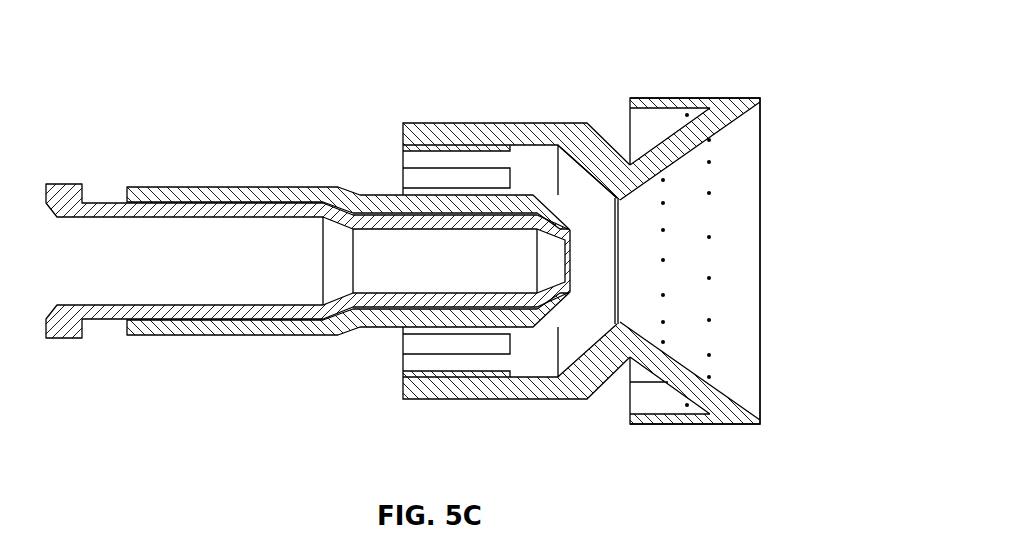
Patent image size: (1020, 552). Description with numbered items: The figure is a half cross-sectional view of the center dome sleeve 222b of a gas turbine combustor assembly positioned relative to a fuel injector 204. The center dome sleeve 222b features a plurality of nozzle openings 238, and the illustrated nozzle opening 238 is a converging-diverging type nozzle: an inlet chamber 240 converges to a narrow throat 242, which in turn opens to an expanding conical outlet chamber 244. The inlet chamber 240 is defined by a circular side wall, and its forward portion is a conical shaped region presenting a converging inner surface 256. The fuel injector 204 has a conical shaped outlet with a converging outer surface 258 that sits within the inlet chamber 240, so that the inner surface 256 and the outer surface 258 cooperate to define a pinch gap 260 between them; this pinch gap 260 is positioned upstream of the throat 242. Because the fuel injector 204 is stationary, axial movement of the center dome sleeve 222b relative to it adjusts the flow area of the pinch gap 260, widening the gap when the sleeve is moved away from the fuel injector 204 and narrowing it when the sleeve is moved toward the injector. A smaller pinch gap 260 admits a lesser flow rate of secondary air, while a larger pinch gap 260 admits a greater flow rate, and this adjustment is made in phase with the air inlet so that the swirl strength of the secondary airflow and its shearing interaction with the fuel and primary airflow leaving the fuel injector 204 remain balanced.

The fuel injector 204 is at (222, 180).
The inlet chamber 240 is at (527, 168).
The center dome sleeve 222b is at (607, 104).
The converging inner surface 256 is at (572, 163).
The converging outer surface 258 is at (518, 318).
The pinch gap 260 is at (584, 177).
The throat 242 is at (635, 263).
The outlet chamber 244 is at (731, 269).
The nozzle opening 238 is at (806, 279).